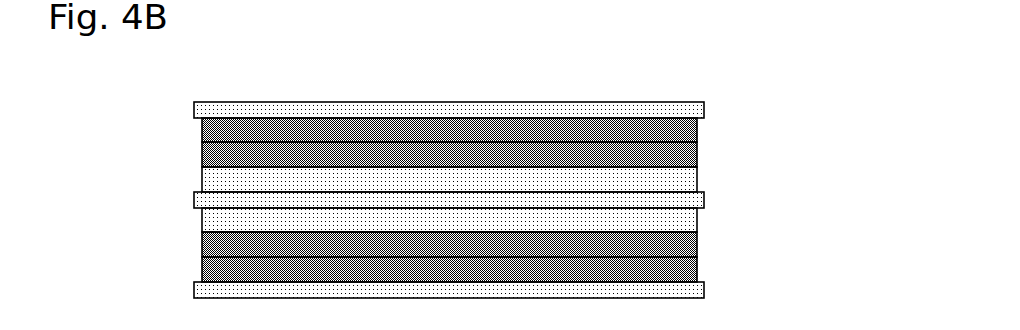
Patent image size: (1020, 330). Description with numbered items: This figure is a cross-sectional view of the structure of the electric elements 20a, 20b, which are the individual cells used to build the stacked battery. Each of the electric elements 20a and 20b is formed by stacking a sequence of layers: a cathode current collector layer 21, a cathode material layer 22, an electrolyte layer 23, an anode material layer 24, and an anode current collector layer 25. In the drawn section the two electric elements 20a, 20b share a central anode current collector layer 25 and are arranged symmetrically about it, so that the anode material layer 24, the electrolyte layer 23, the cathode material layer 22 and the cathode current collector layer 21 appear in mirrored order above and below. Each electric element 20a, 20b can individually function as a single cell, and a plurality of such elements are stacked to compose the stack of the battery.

The electric element 20a is at (494, 168).
The electric element 20b is at (497, 56).
The cathode current collector layer 21 is at (704, 112).
The cathode material layer 22 is at (697, 137).
The electrolyte layer 23 is at (697, 161).
The anode material layer 24 is at (697, 185).
The anode current collector layer 25 is at (704, 201).